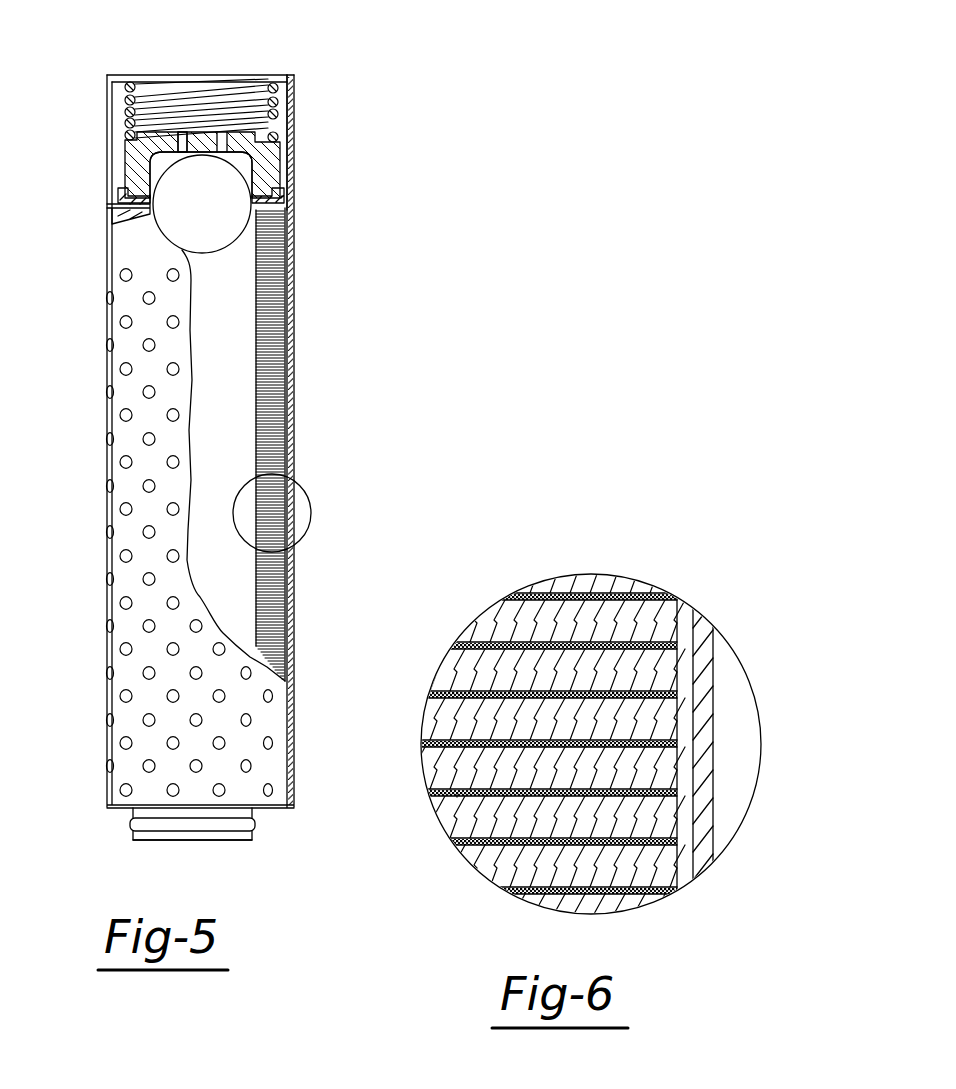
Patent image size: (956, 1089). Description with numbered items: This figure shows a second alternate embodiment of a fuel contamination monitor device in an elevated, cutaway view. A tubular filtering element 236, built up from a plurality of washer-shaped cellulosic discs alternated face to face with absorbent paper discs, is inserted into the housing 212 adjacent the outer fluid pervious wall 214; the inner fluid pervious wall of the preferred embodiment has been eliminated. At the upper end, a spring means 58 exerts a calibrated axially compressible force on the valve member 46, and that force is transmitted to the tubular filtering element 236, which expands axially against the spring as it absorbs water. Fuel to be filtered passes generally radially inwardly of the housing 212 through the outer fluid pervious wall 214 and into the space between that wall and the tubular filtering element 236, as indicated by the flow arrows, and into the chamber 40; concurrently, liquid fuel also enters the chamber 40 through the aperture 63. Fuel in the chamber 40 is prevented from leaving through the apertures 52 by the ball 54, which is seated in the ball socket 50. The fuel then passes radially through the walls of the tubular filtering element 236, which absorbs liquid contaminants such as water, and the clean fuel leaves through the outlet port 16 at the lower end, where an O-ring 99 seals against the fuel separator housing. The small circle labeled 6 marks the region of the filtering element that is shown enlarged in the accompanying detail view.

In FIG. 5, the aperture 63 is at (262, 76).
In FIG. 5, the apertures 52 is at (183, 135).
In FIG. 5, the spring means 58 is at (280, 100).
In FIG. 5, the housing 212 is at (297, 118).
In FIG. 5, the chamber 40 is at (272, 127).
In FIG. 5, the ball socket 50 is at (155, 175).
In FIG. 5, the valve member 46 is at (288, 180).
In FIG. 5, the ball 54 is at (185, 218).
In FIG. 5, the tubular filtering element 236 is at (227, 458).
In FIG. 6, the tubular filtering element 236 is at (455, 797).
In FIG. 5, the detail view circle 6 is at (311, 513).
In FIG. 5, the outer fluid pervious wall 214 is at (297, 597).
In FIG. 5, the O-ring 99 is at (255, 824).
In FIG. 5, the outlet port 16 is at (138, 842).